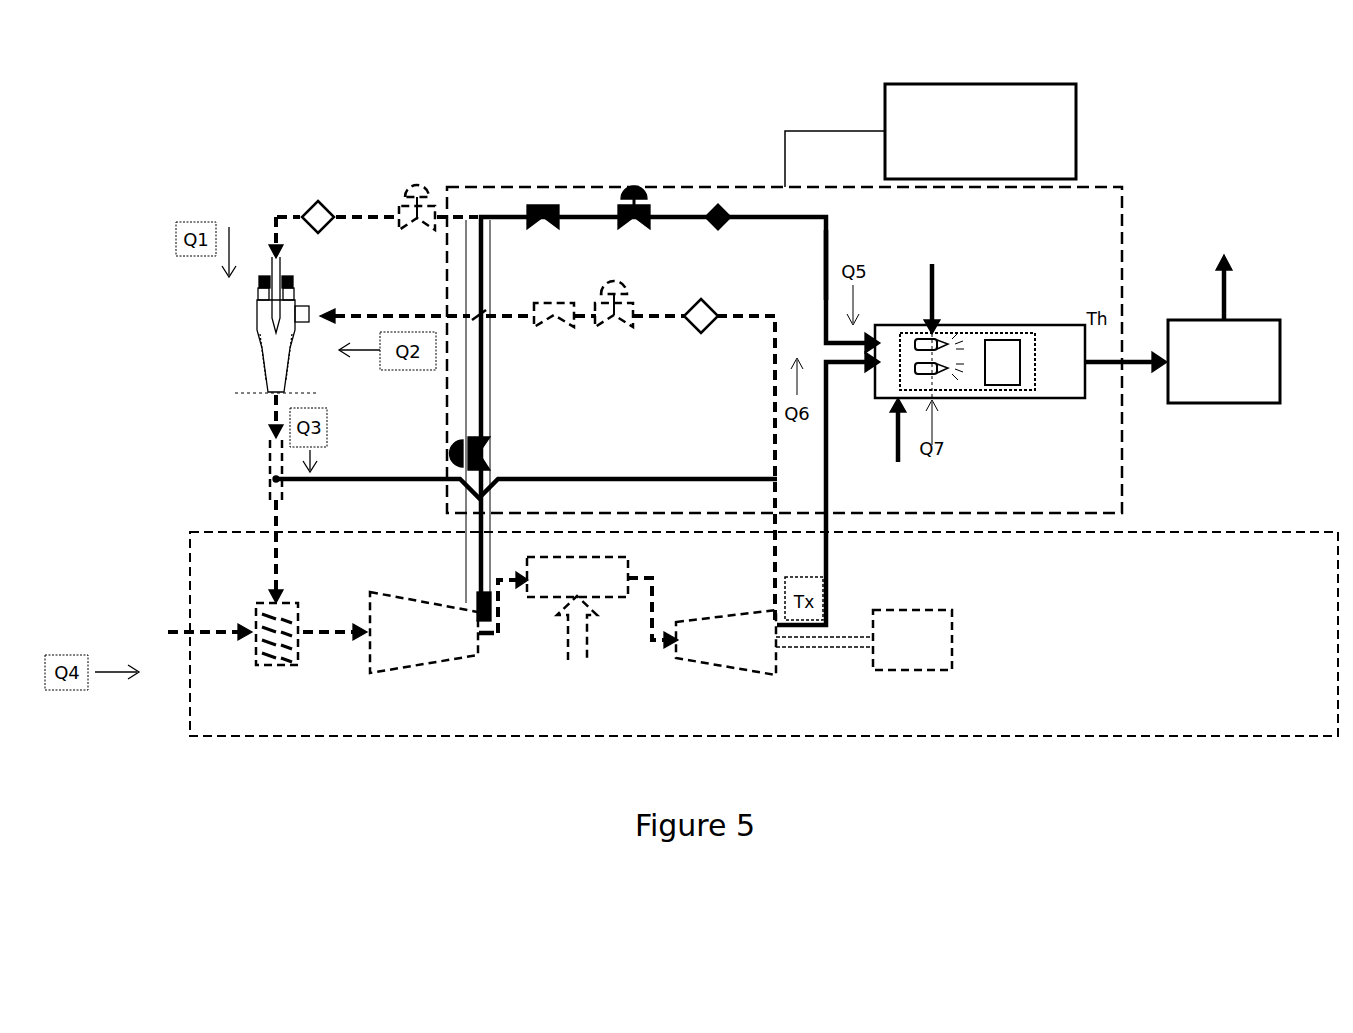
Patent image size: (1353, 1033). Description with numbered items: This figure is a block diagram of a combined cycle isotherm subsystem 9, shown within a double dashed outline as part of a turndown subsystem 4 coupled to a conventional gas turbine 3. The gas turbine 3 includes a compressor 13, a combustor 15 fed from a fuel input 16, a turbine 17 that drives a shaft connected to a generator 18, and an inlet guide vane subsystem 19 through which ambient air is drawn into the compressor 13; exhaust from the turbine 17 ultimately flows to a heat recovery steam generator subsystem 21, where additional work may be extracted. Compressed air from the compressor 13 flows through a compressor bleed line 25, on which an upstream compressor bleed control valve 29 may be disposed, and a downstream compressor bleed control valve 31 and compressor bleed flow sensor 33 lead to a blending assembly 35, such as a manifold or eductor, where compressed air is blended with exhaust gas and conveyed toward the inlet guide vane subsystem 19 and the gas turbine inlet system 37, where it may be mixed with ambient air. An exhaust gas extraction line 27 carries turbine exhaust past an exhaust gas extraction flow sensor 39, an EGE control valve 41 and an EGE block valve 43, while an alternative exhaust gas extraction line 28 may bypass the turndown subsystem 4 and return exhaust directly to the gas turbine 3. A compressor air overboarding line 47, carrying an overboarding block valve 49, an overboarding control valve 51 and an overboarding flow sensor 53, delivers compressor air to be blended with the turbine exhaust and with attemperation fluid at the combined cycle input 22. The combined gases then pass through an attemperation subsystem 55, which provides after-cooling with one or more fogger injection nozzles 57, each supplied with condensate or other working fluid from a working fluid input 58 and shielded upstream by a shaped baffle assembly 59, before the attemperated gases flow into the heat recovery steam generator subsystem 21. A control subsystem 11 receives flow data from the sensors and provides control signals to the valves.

The gas turbine 3 is at (275, 737).
The turndown subsystem 4 is at (316, 132).
The combined cycle isotherm subsystem 9 is at (1100, 187).
The control subsystem 11 is at (1076, 110).
The compressor 13 is at (425, 668).
The combustor 15 is at (608, 597).
The fuel input 16 is at (577, 660).
The turbine 17 is at (727, 660).
The generator 18 is at (912, 670).
The inlet guide vane subsystem 19 is at (265, 603).
The heat recovery steam generator subsystem 21 is at (1224, 403).
The combined cycle input 22 is at (898, 462).
The compressor bleed line 25 is at (478, 575).
The exhaust gas extraction line 27 is at (775, 570).
The exhaust gas extraction line 28 is at (685, 480).
The upstream compressor bleed control valve 29 is at (463, 453).
The downstream compressor bleed control valve 31 is at (418, 185).
The compressor bleed flow sensor 33 is at (314, 200).
The blending assembly 35 is at (255, 322).
The gas turbine inlet system 37 is at (268, 462).
The exhaust gas extraction flow sensor 39 is at (705, 300).
The EGE control valve 41 is at (617, 290).
The EGE block valve 43 is at (554, 310).
The compressor air overboarding line 47 is at (826, 253).
The overboarding block valve 49 is at (533, 208).
The overboarding control valve 51 is at (634, 190).
The overboarding flow sensor 53 is at (718, 204).
The attemperation subsystem 55 is at (968, 333).
The fogger injection nozzle 57 is at (947, 375).
The working fluid input 58 is at (934, 265).
The shaped baffle assembly 59 is at (1000, 390).